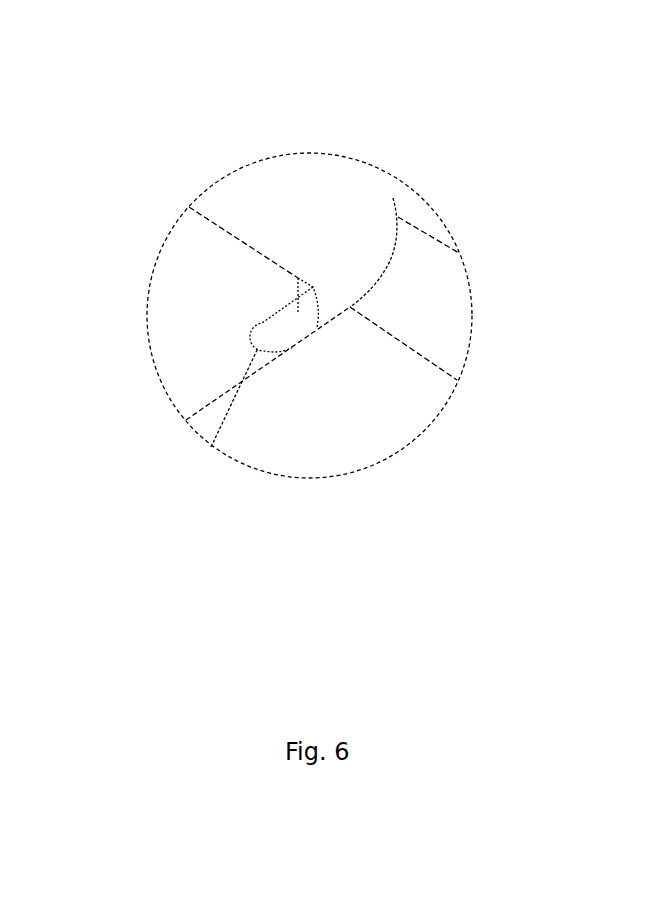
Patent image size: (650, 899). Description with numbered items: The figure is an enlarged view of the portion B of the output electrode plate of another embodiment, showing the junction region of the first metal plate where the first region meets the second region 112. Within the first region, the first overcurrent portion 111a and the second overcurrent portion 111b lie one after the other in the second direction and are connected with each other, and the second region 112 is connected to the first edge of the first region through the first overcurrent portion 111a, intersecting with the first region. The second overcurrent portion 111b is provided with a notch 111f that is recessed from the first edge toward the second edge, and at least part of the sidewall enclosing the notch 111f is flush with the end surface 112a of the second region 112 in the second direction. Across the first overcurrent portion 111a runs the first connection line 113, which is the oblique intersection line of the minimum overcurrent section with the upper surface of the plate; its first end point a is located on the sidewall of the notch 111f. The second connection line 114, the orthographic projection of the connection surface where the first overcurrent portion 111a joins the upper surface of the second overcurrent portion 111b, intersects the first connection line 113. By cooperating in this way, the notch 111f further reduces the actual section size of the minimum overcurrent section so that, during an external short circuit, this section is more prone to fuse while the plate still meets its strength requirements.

The portion B is at (334, 38).
The first overcurrent portion 111a is at (342, 462).
The second overcurrent portion 111b is at (173, 288).
The notch 111f is at (298, 278).
The second region 112 is at (448, 283).
The end surface 112a is at (393, 198).
The first connection line 113 is at (220, 450).
The second connection line 114 is at (210, 403).
The first end point a is at (277, 317).